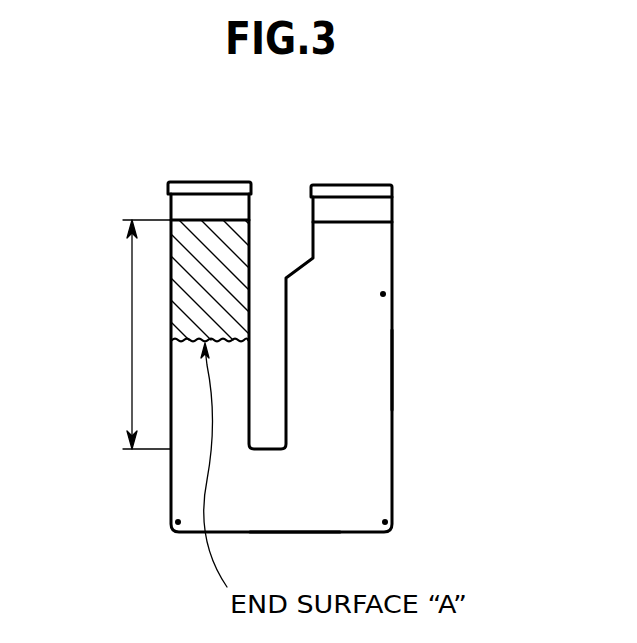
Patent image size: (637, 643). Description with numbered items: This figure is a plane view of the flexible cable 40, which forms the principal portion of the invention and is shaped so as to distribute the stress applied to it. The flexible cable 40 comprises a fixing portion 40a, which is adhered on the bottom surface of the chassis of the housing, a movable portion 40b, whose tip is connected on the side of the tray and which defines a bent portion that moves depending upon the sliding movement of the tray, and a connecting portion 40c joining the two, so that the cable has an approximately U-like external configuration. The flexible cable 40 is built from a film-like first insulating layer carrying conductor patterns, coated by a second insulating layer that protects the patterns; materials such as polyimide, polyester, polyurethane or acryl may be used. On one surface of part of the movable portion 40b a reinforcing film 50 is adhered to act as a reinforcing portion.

The flexible cable 40 is at (270, 156).
The fixing portion 40a is at (363, 372).
The movable portion 40b is at (131, 357).
The connecting portion 40c is at (305, 503).
The reinforcing film 50 is at (203, 273).